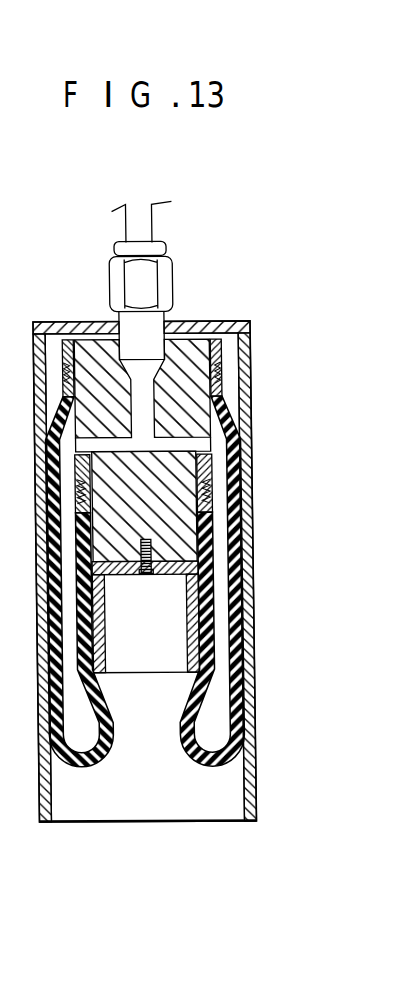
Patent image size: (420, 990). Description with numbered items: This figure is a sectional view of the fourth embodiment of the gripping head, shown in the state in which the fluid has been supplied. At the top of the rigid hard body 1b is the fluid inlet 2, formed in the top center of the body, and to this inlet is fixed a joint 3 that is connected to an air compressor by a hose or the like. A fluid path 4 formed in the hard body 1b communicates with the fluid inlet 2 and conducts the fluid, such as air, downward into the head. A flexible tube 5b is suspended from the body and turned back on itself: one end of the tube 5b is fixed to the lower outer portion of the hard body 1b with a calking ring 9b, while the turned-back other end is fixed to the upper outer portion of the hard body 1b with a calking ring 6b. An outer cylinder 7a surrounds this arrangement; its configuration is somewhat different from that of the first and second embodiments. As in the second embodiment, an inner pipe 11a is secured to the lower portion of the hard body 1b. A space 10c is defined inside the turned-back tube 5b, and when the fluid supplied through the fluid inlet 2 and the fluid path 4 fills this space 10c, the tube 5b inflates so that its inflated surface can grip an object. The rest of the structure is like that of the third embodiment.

The joint 3 is at (166, 276).
The fluid inlet 2 is at (163, 353).
The calking ring 6b is at (218, 363).
The hard body 1b is at (210, 402).
The fluid path 4 is at (210, 437).
The calking ring 9b is at (205, 477).
The outer cylinder 7a is at (226, 505).
The inner pipe 11a is at (203, 576).
The tube 5b is at (257, 623).
The space 10c is at (213, 698).